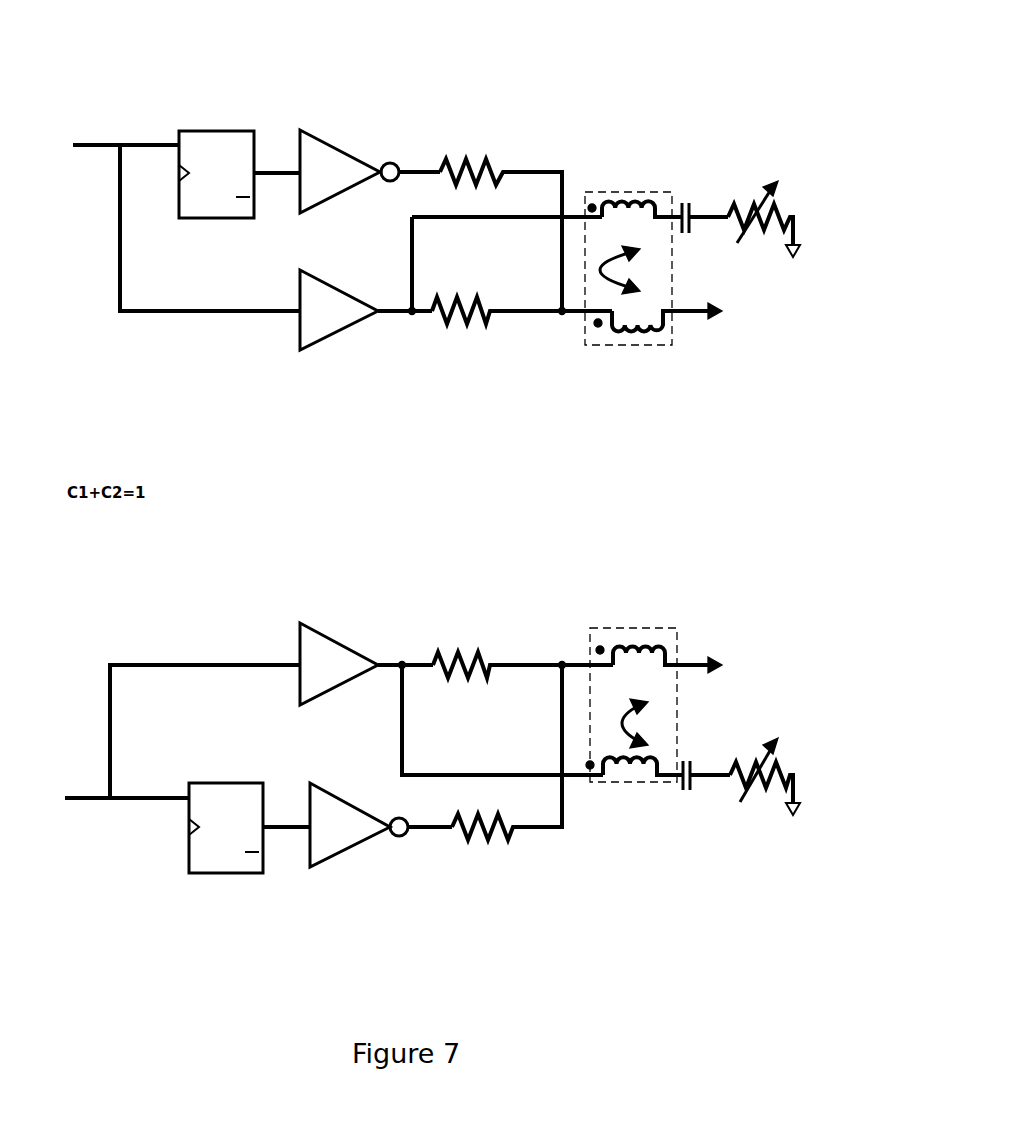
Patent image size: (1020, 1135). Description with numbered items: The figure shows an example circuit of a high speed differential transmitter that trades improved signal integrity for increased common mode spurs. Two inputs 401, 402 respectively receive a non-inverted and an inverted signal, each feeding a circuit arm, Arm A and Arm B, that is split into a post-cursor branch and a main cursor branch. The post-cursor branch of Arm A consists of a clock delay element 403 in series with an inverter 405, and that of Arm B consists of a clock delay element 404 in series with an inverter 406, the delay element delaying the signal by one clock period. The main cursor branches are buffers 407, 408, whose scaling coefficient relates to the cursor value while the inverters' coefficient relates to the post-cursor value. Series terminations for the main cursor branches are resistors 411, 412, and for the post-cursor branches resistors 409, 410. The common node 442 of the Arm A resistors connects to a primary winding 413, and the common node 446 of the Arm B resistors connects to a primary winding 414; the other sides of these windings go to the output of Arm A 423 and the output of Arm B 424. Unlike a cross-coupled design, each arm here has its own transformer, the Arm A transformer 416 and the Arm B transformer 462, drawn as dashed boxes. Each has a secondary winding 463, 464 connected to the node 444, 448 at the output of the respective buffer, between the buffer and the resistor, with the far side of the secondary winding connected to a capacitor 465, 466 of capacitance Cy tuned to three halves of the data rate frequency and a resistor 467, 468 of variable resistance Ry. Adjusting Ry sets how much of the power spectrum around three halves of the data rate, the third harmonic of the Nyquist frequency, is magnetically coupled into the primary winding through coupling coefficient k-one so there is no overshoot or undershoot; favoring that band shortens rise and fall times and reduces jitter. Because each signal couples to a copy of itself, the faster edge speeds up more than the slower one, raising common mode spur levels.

The input 401 is at (59, 114).
The input 402 is at (65, 866).
The clock delay element 403 is at (219, 114).
The clock delay element 404 is at (226, 891).
The inverter 405 is at (339, 133).
The inverter 406 is at (368, 873).
The buffer 407 is at (319, 360).
The buffer 408 is at (324, 619).
The resistor 409 is at (461, 147).
The resistor 410 is at (486, 866).
The resistor 411 is at (468, 288).
The resistor 412 is at (464, 688).
The primary winding 413 is at (622, 303).
The primary winding 414 is at (617, 675).
The coupled inductor transformer (Arm A) 416 is at (665, 347).
The output of Arm A 423 is at (734, 271).
The output of Arm B 424 is at (742, 704).
The common node 442 is at (563, 314).
The node 444 is at (414, 314).
The common node 446 is at (564, 664).
The node 448 is at (404, 664).
The transformer 462 is at (678, 628).
The secondary winding 463 is at (631, 185).
The secondary winding 464 is at (626, 808).
The capacitor 465 is at (702, 174).
The capacitor 466 is at (683, 813).
The resistor 467 is at (794, 149).
The resistor 468 is at (748, 818).